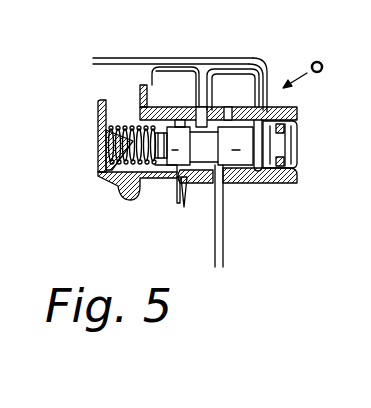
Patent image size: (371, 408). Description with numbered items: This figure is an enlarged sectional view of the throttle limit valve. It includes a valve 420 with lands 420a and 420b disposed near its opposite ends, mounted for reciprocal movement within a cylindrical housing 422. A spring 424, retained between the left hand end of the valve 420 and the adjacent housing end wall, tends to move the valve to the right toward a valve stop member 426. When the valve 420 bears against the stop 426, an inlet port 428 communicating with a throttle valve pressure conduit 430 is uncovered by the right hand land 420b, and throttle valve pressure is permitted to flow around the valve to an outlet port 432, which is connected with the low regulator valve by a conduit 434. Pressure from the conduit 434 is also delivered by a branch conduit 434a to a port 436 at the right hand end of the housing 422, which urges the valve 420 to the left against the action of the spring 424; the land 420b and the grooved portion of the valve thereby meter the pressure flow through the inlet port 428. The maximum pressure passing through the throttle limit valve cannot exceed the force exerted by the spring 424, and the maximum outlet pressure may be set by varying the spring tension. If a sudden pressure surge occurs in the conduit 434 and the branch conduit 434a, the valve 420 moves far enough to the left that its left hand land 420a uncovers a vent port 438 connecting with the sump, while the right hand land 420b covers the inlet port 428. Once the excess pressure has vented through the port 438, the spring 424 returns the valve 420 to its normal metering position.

The valve 420 is at (204, 152).
The left hand land 420a is at (177, 140).
The right hand land 420b is at (236, 140).
The cylindrical housing 422 is at (118, 146).
The spring 424 is at (116, 168).
The valve stop member 426 is at (273, 180).
The inlet port 428 is at (222, 182).
The throttle valve pressure conduit 430 is at (224, 250).
The outlet port 432 is at (197, 98).
The conduit 434 is at (106, 58).
The branch conduit 434a is at (290, 58).
The port 436 is at (260, 113).
The vent port 438 is at (177, 182).